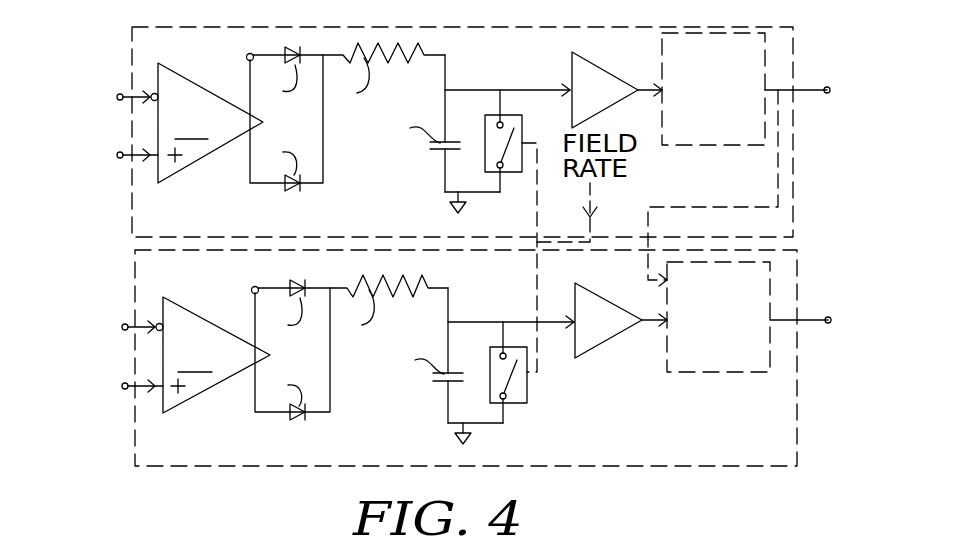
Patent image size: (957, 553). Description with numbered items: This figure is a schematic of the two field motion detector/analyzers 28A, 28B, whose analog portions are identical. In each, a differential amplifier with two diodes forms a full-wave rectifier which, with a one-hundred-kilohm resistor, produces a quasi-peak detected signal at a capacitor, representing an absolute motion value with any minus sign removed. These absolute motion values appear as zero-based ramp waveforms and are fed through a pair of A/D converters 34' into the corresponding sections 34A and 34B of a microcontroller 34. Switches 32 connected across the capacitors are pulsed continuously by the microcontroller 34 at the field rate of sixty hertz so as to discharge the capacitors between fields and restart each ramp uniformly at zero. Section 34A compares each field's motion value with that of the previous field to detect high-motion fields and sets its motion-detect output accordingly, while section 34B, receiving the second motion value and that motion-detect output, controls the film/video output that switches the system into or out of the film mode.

The field motion detector/analyzer 28A is at (254, 228).
The field motion detector/analyzer 28B is at (260, 461).
The switches 32 is at (515, 172).
The microcontroller 34 is at (712, 245).
The A/D converters 34' is at (619, 191).
The microcontroller section 34A is at (742, 101).
The microcontroller section 34B is at (748, 333).